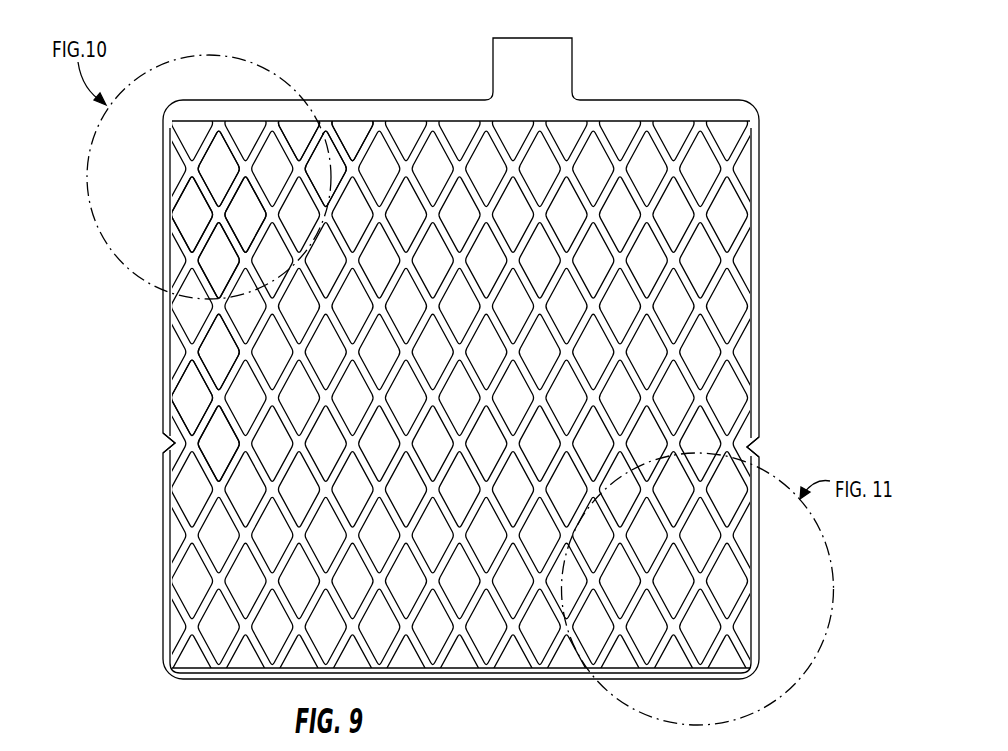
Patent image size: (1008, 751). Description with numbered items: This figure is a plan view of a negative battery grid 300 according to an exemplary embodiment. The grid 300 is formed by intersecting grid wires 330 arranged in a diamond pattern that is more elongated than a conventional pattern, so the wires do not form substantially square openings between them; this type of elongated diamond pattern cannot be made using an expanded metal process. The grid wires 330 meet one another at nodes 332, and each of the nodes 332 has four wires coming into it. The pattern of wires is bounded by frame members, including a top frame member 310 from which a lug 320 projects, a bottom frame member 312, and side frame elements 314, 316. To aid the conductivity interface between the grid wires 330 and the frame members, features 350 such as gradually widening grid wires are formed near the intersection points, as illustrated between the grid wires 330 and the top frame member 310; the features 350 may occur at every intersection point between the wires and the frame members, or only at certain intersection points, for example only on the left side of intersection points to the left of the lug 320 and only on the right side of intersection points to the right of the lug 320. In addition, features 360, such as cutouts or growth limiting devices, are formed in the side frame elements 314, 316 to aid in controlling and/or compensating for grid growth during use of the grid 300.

The grid 300 is at (689, 73).
The top frame member 310 is at (358, 118).
The bottom edge 312 is at (566, 673).
The side frame element 314 is at (166, 344).
The side frame element 316 is at (760, 370).
The lug 320 is at (560, 67).
The grid wires 330 is at (208, 408).
The nodes 332 is at (216, 212).
The features 350 is at (323, 121).
The features 360 is at (168, 442).